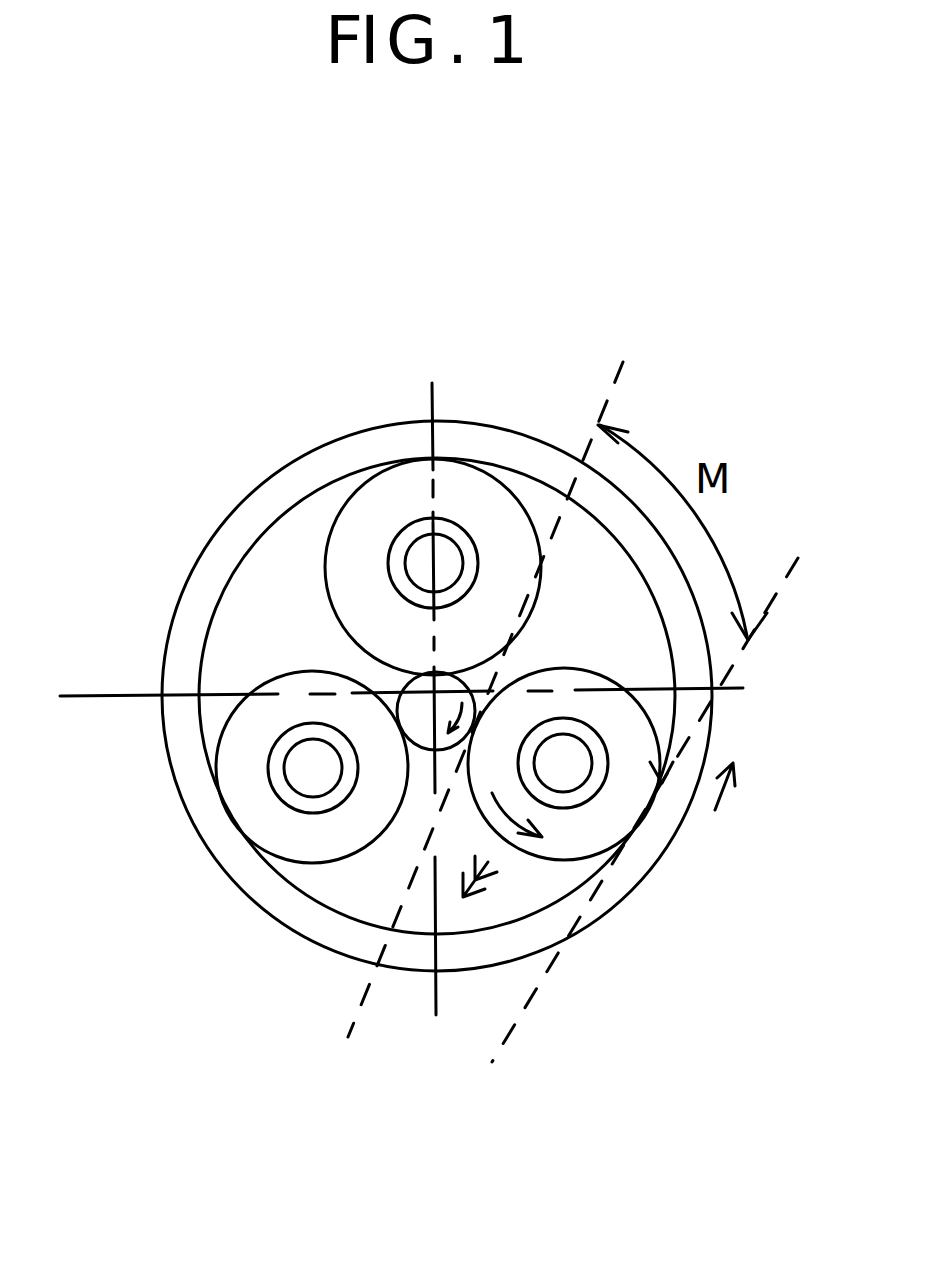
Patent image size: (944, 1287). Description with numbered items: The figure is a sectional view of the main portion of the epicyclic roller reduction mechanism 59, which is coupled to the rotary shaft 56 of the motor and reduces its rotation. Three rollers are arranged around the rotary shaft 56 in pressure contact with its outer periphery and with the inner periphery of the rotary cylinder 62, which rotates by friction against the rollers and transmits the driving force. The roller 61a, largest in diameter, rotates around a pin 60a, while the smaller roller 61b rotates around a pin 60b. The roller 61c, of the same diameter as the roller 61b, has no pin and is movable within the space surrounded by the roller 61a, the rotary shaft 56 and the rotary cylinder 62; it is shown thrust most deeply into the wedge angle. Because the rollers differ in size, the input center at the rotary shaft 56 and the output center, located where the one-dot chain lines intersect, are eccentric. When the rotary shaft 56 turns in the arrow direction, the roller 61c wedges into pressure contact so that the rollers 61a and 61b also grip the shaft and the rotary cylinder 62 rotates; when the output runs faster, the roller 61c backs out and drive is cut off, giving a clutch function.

The rotary shaft 56 is at (417, 737).
The epicyclic roller reduction mechanism 59 is at (593, 992).
The pin 60a is at (450, 556).
The pin 60b is at (295, 767).
The roller 61a is at (373, 513).
The roller 61b is at (263, 833).
The roller 61c is at (620, 807).
The rotary cylinder 62 is at (222, 533).